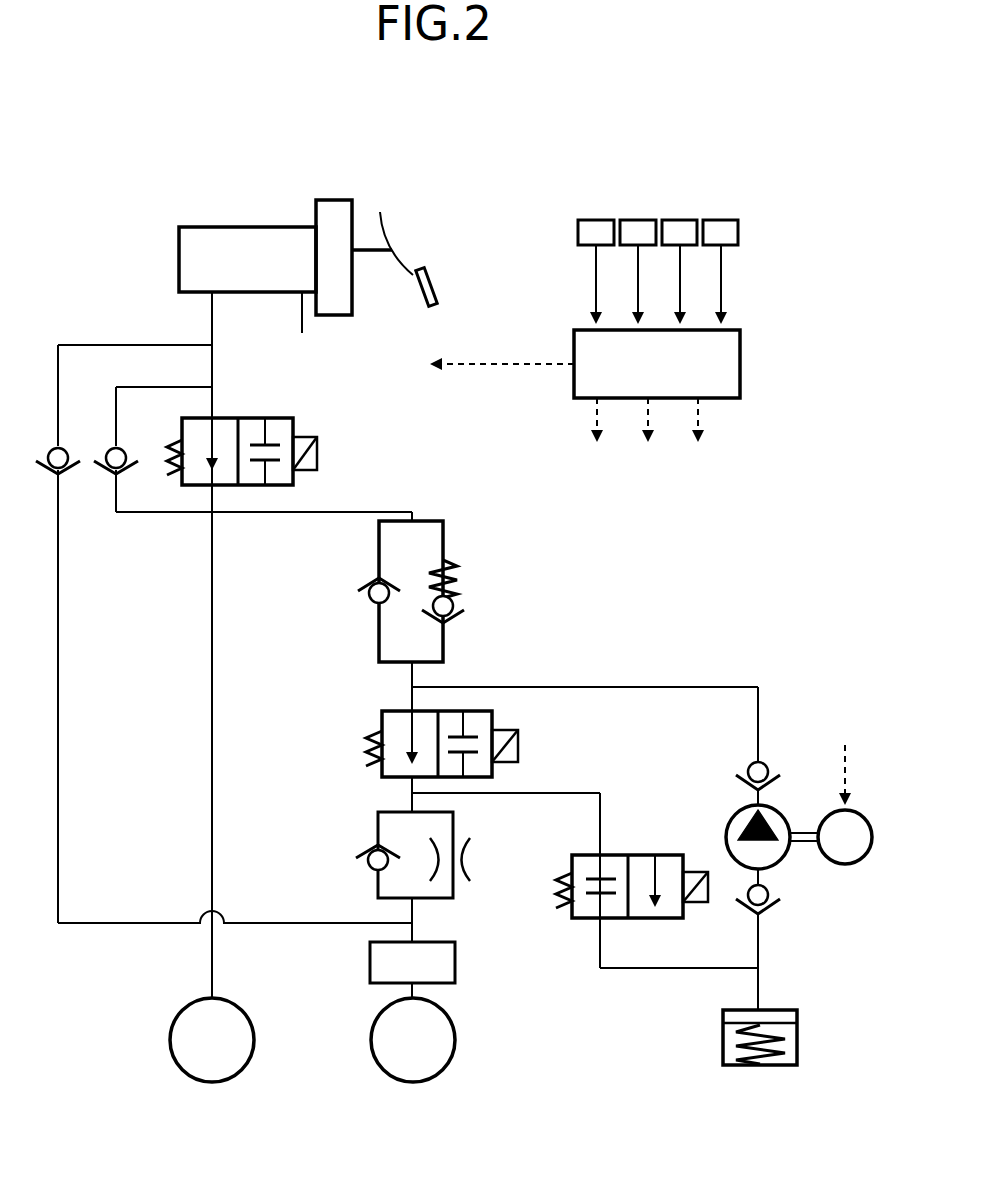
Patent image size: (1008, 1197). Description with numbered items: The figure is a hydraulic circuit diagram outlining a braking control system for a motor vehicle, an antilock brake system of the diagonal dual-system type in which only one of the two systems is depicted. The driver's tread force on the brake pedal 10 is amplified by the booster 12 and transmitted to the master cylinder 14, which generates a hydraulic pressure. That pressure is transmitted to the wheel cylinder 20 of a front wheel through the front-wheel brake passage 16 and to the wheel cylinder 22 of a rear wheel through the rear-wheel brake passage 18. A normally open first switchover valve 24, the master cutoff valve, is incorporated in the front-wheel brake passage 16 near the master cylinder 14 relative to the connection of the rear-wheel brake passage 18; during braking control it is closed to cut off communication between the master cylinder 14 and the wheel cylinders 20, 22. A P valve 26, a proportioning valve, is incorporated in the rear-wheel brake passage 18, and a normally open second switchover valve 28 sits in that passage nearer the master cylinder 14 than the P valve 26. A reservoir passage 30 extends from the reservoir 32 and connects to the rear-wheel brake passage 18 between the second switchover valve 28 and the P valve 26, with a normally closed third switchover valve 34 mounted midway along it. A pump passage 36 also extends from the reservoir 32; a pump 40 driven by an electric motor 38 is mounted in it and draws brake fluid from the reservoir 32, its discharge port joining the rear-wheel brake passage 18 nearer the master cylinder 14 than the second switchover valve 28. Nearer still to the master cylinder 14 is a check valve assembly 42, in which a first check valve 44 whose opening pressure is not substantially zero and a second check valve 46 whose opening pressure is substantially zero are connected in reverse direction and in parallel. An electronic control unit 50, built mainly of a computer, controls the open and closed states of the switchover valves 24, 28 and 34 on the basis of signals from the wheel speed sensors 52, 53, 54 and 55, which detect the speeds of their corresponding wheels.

The brake pedal 10 is at (430, 279).
The booster 12 is at (333, 200).
The master cylinder 14 is at (202, 227).
The front-wheel brake passage 16 is at (212, 601).
The rear-wheel brake passage 18 is at (372, 510).
The wheel cylinder of front wheel 20 is at (254, 1041).
The wheel cylinder of rear wheel 22 is at (455, 1043).
The first switchover valve 24 is at (254, 418).
The P valve 26 is at (455, 963).
The second switchover valve 28 is at (492, 725).
The reservoir passage 30 is at (586, 793).
The reservoir 32 is at (797, 1043).
The third switchover valve 34 is at (641, 855).
The pump passage 36 is at (702, 687).
The electric motor 38 is at (862, 815).
The pump 40 is at (785, 858).
The check valve assembly 42 is at (431, 601).
The first check valve 44 is at (455, 607).
The second check valve 46 is at (368, 593).
The electronic control unit 50 is at (740, 368).
The wheel speed sensor 52 is at (595, 220).
The wheel speed sensor 53 is at (637, 220).
The wheel speed sensor 54 is at (679, 220).
The wheel speed sensor 55 is at (720, 220).